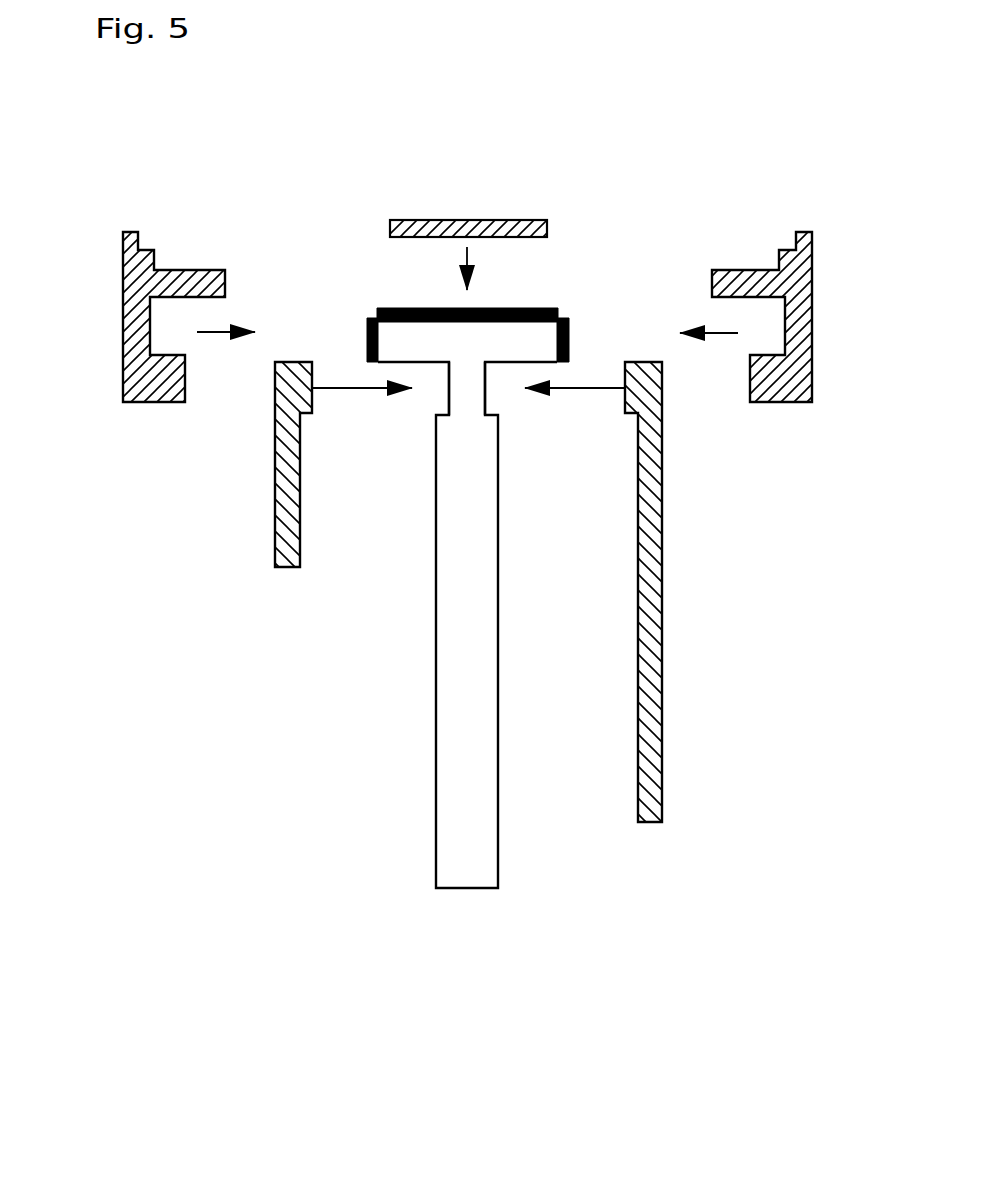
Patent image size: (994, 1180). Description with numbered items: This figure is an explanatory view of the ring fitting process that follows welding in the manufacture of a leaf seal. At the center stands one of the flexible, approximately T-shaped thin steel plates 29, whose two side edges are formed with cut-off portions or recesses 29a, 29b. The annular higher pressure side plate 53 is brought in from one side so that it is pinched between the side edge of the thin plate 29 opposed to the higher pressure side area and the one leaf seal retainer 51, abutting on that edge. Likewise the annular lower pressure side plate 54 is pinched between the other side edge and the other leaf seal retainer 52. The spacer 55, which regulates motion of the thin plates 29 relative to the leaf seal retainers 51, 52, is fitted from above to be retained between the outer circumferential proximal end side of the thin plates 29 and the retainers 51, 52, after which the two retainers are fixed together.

The thin plate 29 is at (467, 655).
The recess 29a is at (448, 400).
The recess 29b is at (486, 403).
The leaf seal retainer 51 is at (812, 320).
The leaf seal retainer 52 is at (123, 318).
The higher pressure side plate 53 is at (663, 717).
The lower pressure side plate 54 is at (275, 492).
The spacer 55 is at (485, 220).